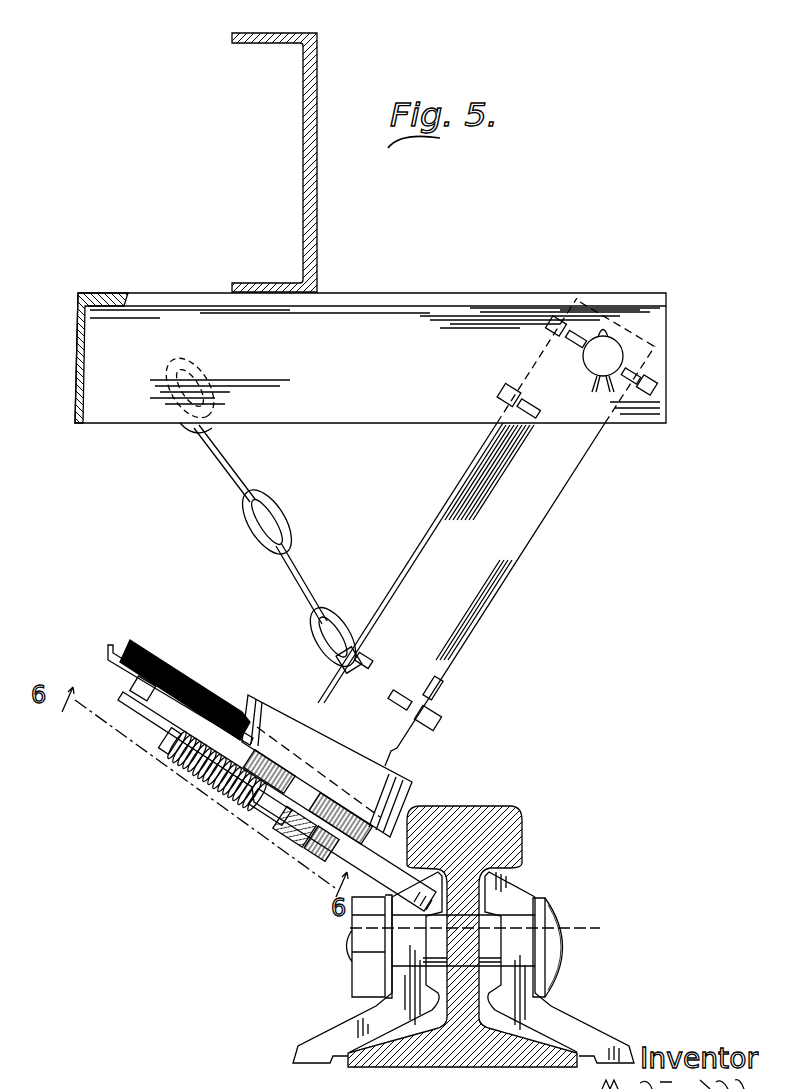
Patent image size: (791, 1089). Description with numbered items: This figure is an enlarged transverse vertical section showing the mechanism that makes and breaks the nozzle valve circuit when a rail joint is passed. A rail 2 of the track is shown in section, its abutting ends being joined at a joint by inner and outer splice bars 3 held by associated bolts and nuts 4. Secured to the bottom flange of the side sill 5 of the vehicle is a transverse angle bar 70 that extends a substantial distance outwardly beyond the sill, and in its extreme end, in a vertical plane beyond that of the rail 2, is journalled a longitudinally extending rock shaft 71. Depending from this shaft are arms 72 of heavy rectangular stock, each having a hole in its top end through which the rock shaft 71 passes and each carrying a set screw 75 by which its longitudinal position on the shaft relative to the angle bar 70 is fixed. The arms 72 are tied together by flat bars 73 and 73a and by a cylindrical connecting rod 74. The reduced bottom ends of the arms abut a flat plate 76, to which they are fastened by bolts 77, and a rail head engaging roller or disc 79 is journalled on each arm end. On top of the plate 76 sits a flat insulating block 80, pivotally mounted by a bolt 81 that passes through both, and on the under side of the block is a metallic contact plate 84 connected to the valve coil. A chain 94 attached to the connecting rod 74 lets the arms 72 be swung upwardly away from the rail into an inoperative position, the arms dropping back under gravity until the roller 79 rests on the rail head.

The rail 2 is at (507, 812).
The splice bar 3 is at (325, 1040).
The bolts and nuts 4 is at (562, 925).
The side sill 5 is at (318, 230).
The angle bar 70 is at (412, 293).
The rock shaft 71 is at (625, 352).
The arm 72 is at (456, 510).
The bar 73 is at (492, 432).
The bar 73a is at (446, 689).
The connecting rod 74 is at (348, 652).
The set screw 75 is at (566, 300).
The plate 76 is at (345, 842).
The bolt 77 is at (300, 832).
The roller or disc 79 is at (270, 705).
The insulating block 80 is at (227, 693).
The bolt 81 is at (270, 812).
The contact plate 84 is at (109, 650).
The chain 94 is at (262, 546).